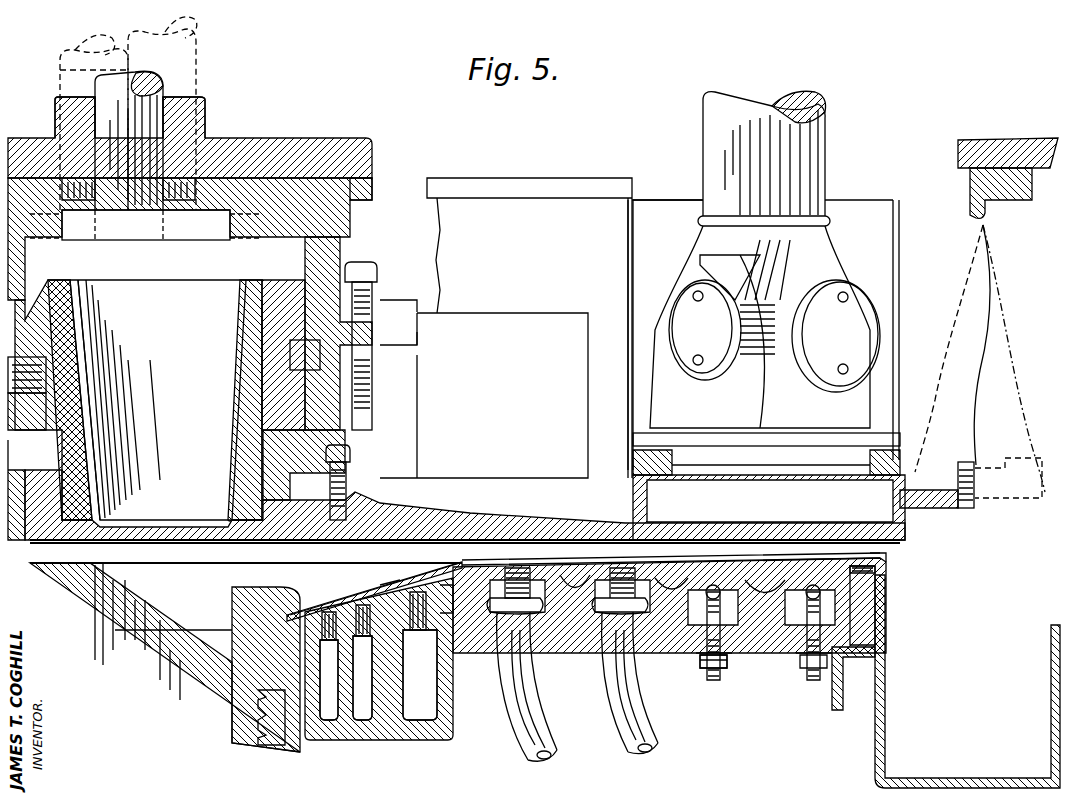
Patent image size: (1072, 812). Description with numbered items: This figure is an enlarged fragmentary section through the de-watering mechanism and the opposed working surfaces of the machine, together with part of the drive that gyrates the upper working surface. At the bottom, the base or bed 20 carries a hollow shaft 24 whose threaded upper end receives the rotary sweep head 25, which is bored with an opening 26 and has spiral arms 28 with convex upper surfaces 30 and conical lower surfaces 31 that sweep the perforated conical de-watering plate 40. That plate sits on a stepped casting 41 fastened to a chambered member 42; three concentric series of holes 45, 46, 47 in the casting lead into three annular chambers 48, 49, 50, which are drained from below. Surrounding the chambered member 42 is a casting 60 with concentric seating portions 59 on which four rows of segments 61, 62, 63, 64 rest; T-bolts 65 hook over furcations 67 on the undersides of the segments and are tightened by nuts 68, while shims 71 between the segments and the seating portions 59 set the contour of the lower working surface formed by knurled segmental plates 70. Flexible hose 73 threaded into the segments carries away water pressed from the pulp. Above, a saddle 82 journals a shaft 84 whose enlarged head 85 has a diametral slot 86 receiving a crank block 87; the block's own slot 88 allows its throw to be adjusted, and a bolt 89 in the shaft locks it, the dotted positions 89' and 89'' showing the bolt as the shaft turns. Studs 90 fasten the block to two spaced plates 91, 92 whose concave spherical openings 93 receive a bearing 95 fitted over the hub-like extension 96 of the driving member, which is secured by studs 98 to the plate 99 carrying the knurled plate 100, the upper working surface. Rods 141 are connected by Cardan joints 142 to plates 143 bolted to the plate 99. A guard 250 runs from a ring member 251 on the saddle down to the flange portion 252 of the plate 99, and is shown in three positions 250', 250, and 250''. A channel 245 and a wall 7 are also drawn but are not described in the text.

The housing wall 7 is at (28, 505).
The base or bed of the machine 20 is at (846, 672).
The hollow shaft 24 is at (280, 742).
The rotary sweep head 25 is at (232, 690).
The opening 26 is at (178, 668).
The arms 28 is at (335, 582).
The upper surfaces 30 is at (420, 566).
The lower surfaces 31 is at (386, 582).
The perforated conical de-watering plate 40 is at (380, 592).
The stepped casting 41 is at (404, 635).
The chambered member 42 is at (420, 736).
The holes 45 is at (332, 628).
The holes 46 is at (372, 618).
The holes 47 is at (414, 610).
The annular chamber 48 is at (331, 720).
The annular chamber 49 is at (368, 720).
The annular chamber 50 is at (440, 712).
The seating portions 59 is at (880, 606).
The casting 60 is at (750, 652).
The segments 61 is at (480, 572).
The segments 62 is at (576, 568).
The segments 63 is at (680, 565).
The segments 64 is at (866, 566).
The T-bolts 65 is at (722, 605).
The hooked furcations 67 is at (822, 605).
The nuts 68 is at (704, 668).
The knurled segmental plates 70 is at (560, 566).
The shims 71 is at (880, 582).
The flexible hose 73 is at (614, 686).
The saddle 82 is at (1006, 144).
The shaft 84 is at (200, 105).
The enlarged head 85 is at (305, 140).
The diametral slot 86 is at (358, 195).
The crank block 87 is at (330, 258).
The diametral slot 88 is at (86, 188).
The bolt 89 is at (145, 168).
The position of bolt 89' is at (79, 122).
The position of bolt 89'' is at (182, 113).
The studs 90 is at (380, 332).
The plate 91 is at (313, 350).
The plate 92 is at (322, 425).
The concave spherical openings 93 is at (297, 300).
The bearing 95 is at (52, 283).
The hub-like extension 96 is at (236, 282).
The studs 98 is at (348, 458).
The plate 99 is at (480, 513).
The knurled plate 100 is at (142, 546).
The rods 141 is at (806, 162).
The Cardan joints or gimbals 142 is at (790, 286).
The plates 143 is at (722, 437).
The channel 245 is at (1052, 680).
The guard 250 is at (999, 345).
The position of guard 250' is at (947, 348).
The position of guard 250'' is at (1014, 358).
The ring member 251 is at (1006, 204).
The flange portion 252 is at (980, 486).